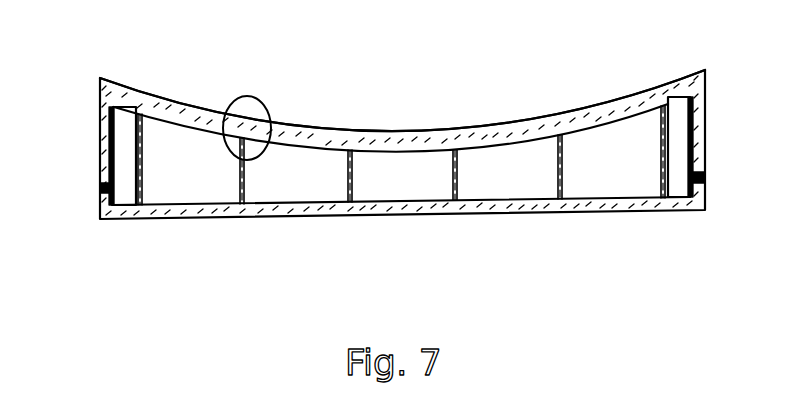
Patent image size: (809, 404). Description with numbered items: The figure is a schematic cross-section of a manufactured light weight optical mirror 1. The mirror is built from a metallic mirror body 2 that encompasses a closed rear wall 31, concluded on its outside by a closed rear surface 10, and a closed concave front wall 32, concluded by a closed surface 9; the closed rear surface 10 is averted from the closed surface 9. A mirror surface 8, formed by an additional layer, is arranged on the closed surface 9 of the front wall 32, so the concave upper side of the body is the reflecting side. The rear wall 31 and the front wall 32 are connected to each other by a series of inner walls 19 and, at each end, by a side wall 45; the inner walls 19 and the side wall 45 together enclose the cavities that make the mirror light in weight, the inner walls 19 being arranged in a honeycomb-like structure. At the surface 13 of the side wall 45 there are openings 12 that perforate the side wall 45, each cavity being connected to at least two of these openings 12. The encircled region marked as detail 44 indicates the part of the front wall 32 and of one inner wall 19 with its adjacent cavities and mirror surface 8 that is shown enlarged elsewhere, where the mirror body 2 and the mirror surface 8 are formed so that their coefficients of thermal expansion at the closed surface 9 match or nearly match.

The light weight optical mirror 1 is at (231, 283).
The metallic mirror body 2 is at (698, 85).
The mirror surface 8 is at (204, 100).
The closed surface 9 is at (310, 127).
The closed rear surface 10 is at (630, 213).
The openings 12 is at (100, 188).
The surface 13 is at (98, 157).
The inner walls 19 is at (150, 145).
The closed rear wall 31 is at (543, 207).
The closed concave front wall 32 is at (538, 125).
The detail 44 is at (260, 97).
The side wall 45 is at (104, 126).